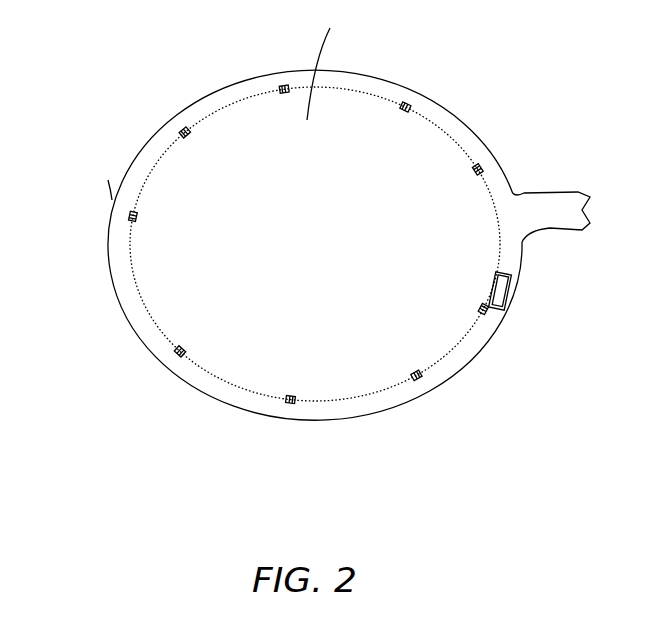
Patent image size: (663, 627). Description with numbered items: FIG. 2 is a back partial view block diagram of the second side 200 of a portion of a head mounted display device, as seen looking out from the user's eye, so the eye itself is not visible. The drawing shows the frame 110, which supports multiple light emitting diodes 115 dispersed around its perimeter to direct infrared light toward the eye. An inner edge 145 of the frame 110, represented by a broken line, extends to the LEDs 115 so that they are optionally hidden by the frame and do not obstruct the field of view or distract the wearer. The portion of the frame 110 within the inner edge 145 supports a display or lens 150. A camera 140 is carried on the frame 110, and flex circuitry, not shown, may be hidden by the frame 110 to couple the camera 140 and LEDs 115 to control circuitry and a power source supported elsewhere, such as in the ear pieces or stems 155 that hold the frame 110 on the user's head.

The frame 110 is at (238, 90).
The light emitting diode (LED) 115 is at (283, 85).
The camera 140 is at (513, 285).
The inner edge 145 is at (368, 100).
The display or lens 150 is at (339, 67).
The ear pieces or stems 155 is at (123, 186).
The second side 200 is at (447, 105).